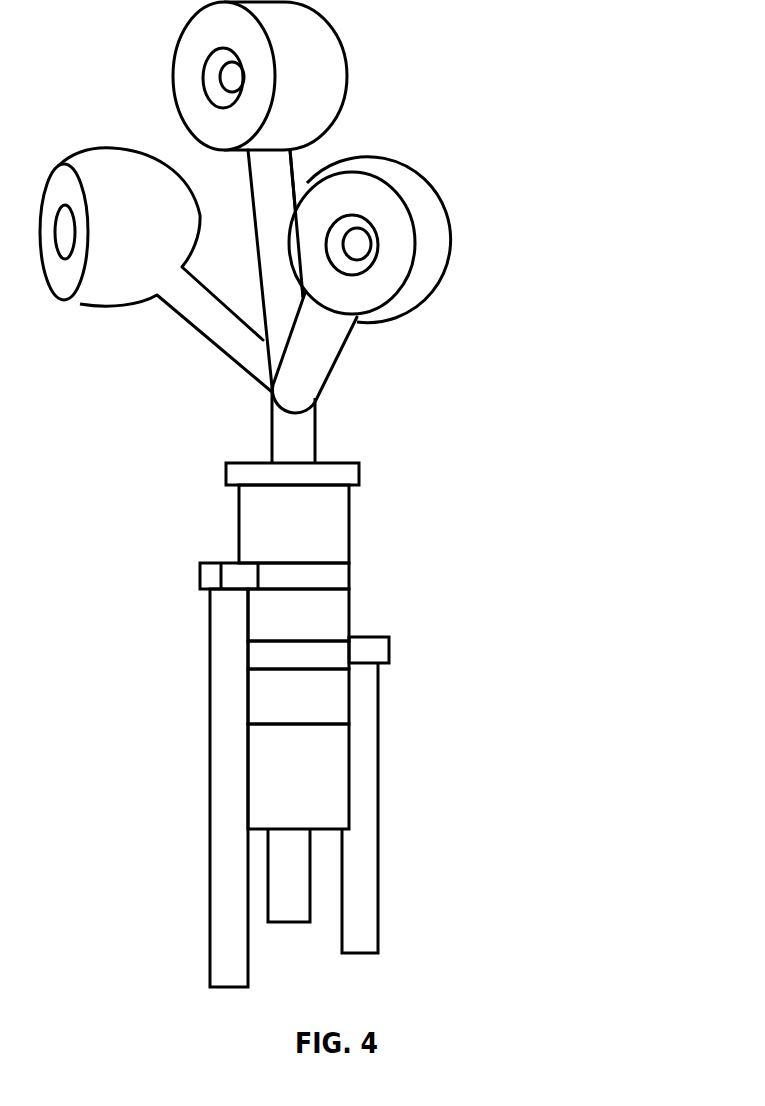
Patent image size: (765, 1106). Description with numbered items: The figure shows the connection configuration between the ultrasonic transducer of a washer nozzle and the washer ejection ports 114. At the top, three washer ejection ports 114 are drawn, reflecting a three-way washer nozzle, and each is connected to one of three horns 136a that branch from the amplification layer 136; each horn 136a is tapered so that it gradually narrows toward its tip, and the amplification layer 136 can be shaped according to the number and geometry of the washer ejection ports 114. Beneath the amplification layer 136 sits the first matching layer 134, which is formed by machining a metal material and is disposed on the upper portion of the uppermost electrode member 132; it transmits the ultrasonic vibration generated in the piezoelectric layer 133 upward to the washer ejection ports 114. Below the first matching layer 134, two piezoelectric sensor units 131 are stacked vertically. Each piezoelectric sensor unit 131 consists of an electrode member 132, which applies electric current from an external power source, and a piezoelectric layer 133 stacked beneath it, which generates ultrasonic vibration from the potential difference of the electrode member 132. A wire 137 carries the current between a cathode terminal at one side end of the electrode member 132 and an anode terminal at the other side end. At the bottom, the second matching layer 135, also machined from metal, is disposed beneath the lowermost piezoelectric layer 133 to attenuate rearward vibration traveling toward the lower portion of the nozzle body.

The washer ejection port 114 is at (328, 60).
The horn 136a is at (280, 180).
The amplification layer 136 is at (357, 427).
The first matching layer 134 is at (330, 527).
The electrode member 132 is at (338, 576).
The piezoelectric layer 133 is at (333, 620).
The piezoelectric sensor unit 131 is at (557, 603).
The second matching layer 135 is at (322, 787).
The wire 137 is at (227, 760).